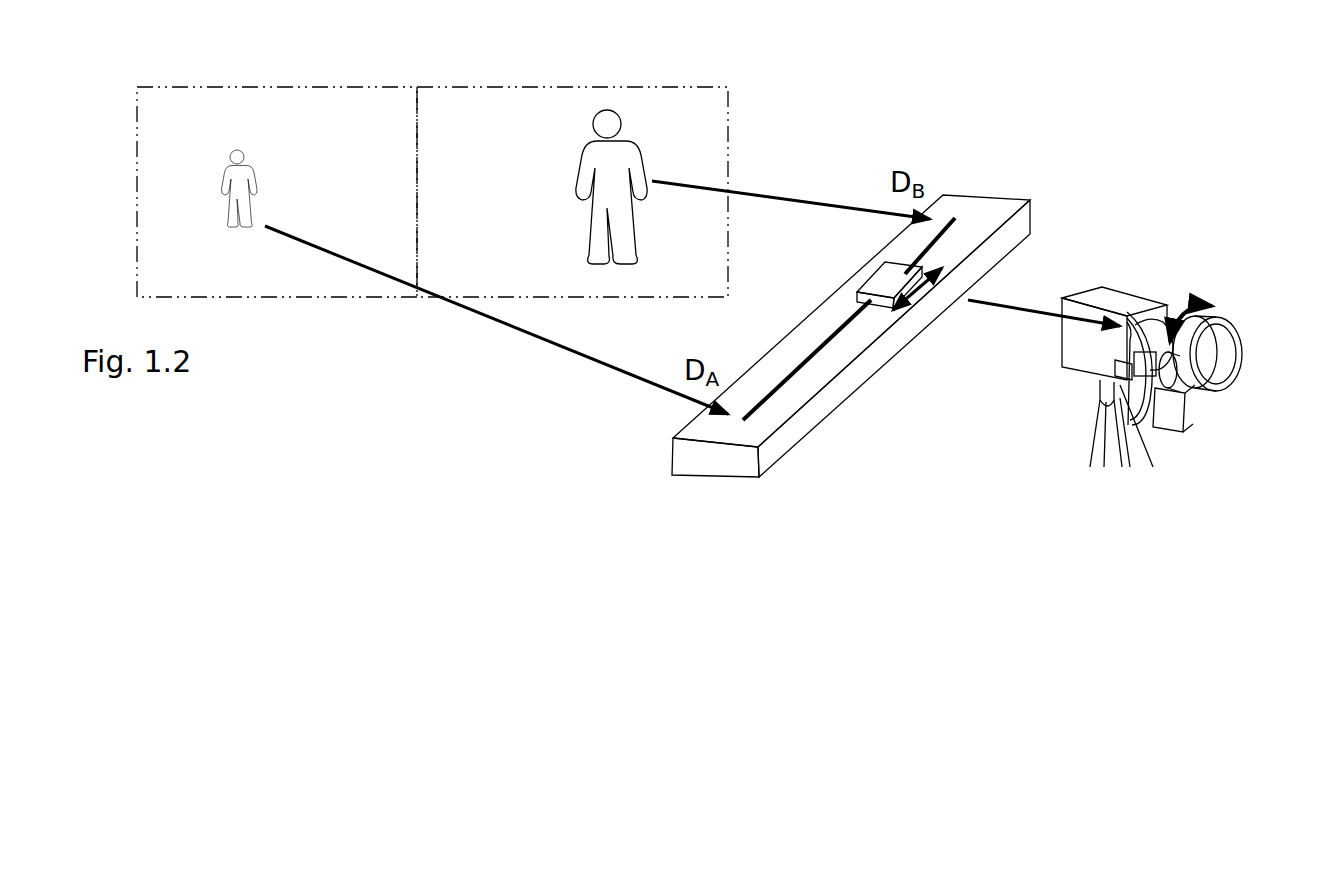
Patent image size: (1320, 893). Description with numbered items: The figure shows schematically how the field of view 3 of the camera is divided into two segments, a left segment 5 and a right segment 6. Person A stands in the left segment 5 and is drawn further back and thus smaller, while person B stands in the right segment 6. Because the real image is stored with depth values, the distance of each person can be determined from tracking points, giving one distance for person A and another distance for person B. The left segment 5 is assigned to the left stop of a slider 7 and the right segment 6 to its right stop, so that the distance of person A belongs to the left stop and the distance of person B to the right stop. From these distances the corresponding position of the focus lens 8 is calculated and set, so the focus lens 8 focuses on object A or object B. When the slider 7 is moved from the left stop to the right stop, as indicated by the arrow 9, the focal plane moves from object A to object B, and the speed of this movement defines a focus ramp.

The field of view 3 is at (432, 210).
The left segment 5 is at (264, 86).
The right segment 6 is at (663, 86).
The slider 7 is at (841, 360).
The focus lens 8 is at (1218, 335).
The arrow 9 is at (912, 302).